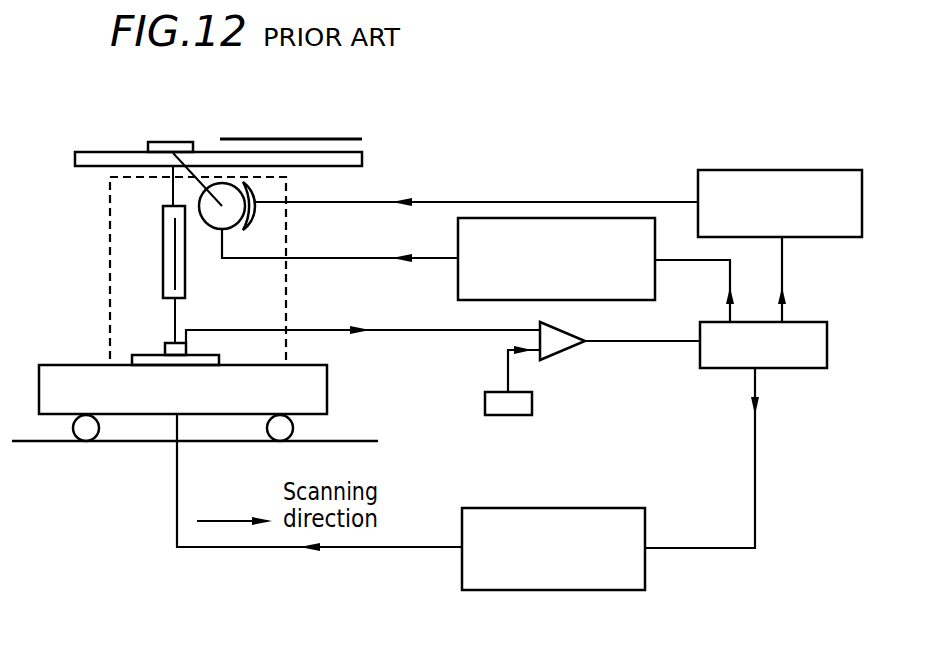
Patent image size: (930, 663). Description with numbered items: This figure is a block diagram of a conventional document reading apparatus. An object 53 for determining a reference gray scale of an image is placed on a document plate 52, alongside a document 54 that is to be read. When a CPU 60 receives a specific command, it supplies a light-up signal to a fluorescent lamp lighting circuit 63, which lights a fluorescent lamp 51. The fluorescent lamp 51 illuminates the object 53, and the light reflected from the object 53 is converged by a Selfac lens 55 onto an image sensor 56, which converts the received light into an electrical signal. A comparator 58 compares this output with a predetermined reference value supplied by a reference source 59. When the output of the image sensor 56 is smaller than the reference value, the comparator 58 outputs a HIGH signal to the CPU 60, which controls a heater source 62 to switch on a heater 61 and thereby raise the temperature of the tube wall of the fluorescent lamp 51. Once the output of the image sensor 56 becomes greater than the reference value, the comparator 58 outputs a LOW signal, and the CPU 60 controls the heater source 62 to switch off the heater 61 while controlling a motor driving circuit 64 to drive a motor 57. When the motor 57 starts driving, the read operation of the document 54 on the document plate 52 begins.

The fluorescent lamp 51 is at (218, 183).
The document plate 52 is at (90, 152).
The object 53 is at (165, 142).
The document 54 is at (342, 139).
The Selfac lens 55 is at (163, 245).
The image sensor 56 is at (133, 355).
The motor 57 is at (142, 414).
The comparator 58 is at (563, 352).
The reference source 59 is at (502, 415).
The CPU 60 is at (812, 322).
The heater 61 is at (262, 190).
The heater source 62 is at (735, 170).
The fluorescent lamp lighting circuit 63 is at (602, 300).
The motor driving circuit 64 is at (628, 590).